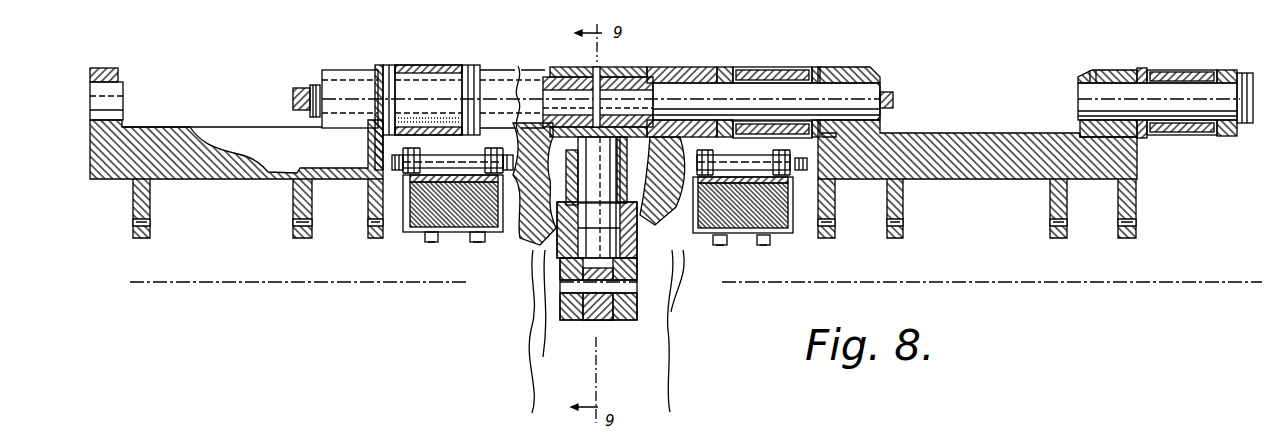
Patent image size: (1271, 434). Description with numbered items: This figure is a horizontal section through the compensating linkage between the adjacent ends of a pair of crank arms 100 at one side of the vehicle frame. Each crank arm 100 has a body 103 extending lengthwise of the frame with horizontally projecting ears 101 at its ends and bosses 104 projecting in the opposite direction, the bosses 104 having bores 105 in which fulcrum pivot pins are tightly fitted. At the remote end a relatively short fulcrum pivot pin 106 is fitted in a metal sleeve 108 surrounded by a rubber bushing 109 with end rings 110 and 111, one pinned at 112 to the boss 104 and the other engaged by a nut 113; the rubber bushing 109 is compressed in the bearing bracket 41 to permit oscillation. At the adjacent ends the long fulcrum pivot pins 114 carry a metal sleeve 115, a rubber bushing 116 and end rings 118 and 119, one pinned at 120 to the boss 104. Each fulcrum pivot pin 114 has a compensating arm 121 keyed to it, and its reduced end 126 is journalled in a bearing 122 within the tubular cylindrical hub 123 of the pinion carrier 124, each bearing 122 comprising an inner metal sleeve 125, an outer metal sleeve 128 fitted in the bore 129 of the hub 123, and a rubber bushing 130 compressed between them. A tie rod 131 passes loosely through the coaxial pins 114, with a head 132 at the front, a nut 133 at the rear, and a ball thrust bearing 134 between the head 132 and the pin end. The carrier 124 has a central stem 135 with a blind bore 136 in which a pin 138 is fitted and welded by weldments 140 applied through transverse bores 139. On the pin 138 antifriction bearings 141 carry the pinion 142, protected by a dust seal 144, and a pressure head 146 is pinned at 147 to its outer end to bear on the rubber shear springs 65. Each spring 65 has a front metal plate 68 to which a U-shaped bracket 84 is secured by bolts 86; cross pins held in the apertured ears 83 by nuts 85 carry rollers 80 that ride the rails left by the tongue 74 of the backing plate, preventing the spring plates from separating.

The bearing bracket 41 is at (1187, 145).
The rubber shear spring 65 is at (462, 235).
The metal plate 68 is at (457, 232).
The vertical bar or tongue 74 is at (760, 167).
The rollers 80 is at (393, 158).
The apertured ears 83 is at (622, 160).
The U-shaped bracket 84 is at (403, 236).
The nuts 85 is at (393, 164).
The bolts 86 is at (431, 242).
The crank arm 100 is at (633, 169).
The ears 101 is at (150, 212).
The body of the crank arm 103 is at (227, 173).
The bosses 104 is at (103, 67).
The bores 105 is at (1078, 85).
The fulcrum pivot pin 106 is at (117, 88).
The metal sleeve 108 is at (1142, 88).
The rubber bushing 109 is at (1180, 68).
The end ring 110 is at (1140, 68).
The end ring 111 is at (1233, 67).
The pin 112 is at (1127, 170).
The nut 113 is at (1245, 137).
The fulcrum pivot pin 114 is at (315, 85).
The metal sleeve 115 is at (766, 101).
The rubber bushing 116 is at (762, 67).
The end ring 118 is at (722, 67).
The end ring 119 is at (817, 67).
The pin 120 is at (830, 147).
The compensating arm 121 is at (503, 235).
The bearings 122 is at (533, 61).
The tubular cylindrical hub 123 is at (580, 67).
The pinion carrier 124 is at (543, 51).
The inner metal sleeve 125 is at (485, 72).
The reduced end 126 is at (470, 89).
The outer metal sleeve 128 is at (575, 78).
The bore 129 is at (599, 67).
The rubber bushing 130 is at (503, 127).
The tie rod 131 is at (896, 102).
The head 132 is at (298, 92).
The nut 133 is at (893, 98).
The ball thrust bearing 134 is at (320, 126).
The central stem 135 is at (556, 215).
The blind bore 136 is at (527, 309).
The pin 138 is at (596, 194).
The transverse bores 139 is at (722, 286).
The weldments 140 is at (701, 282).
The antifriction bearings 141 is at (597, 230).
The pinion 142 is at (670, 312).
The dust seal 144 is at (530, 323).
The pressure head 146 is at (543, 283).
The pin 147 is at (537, 300).